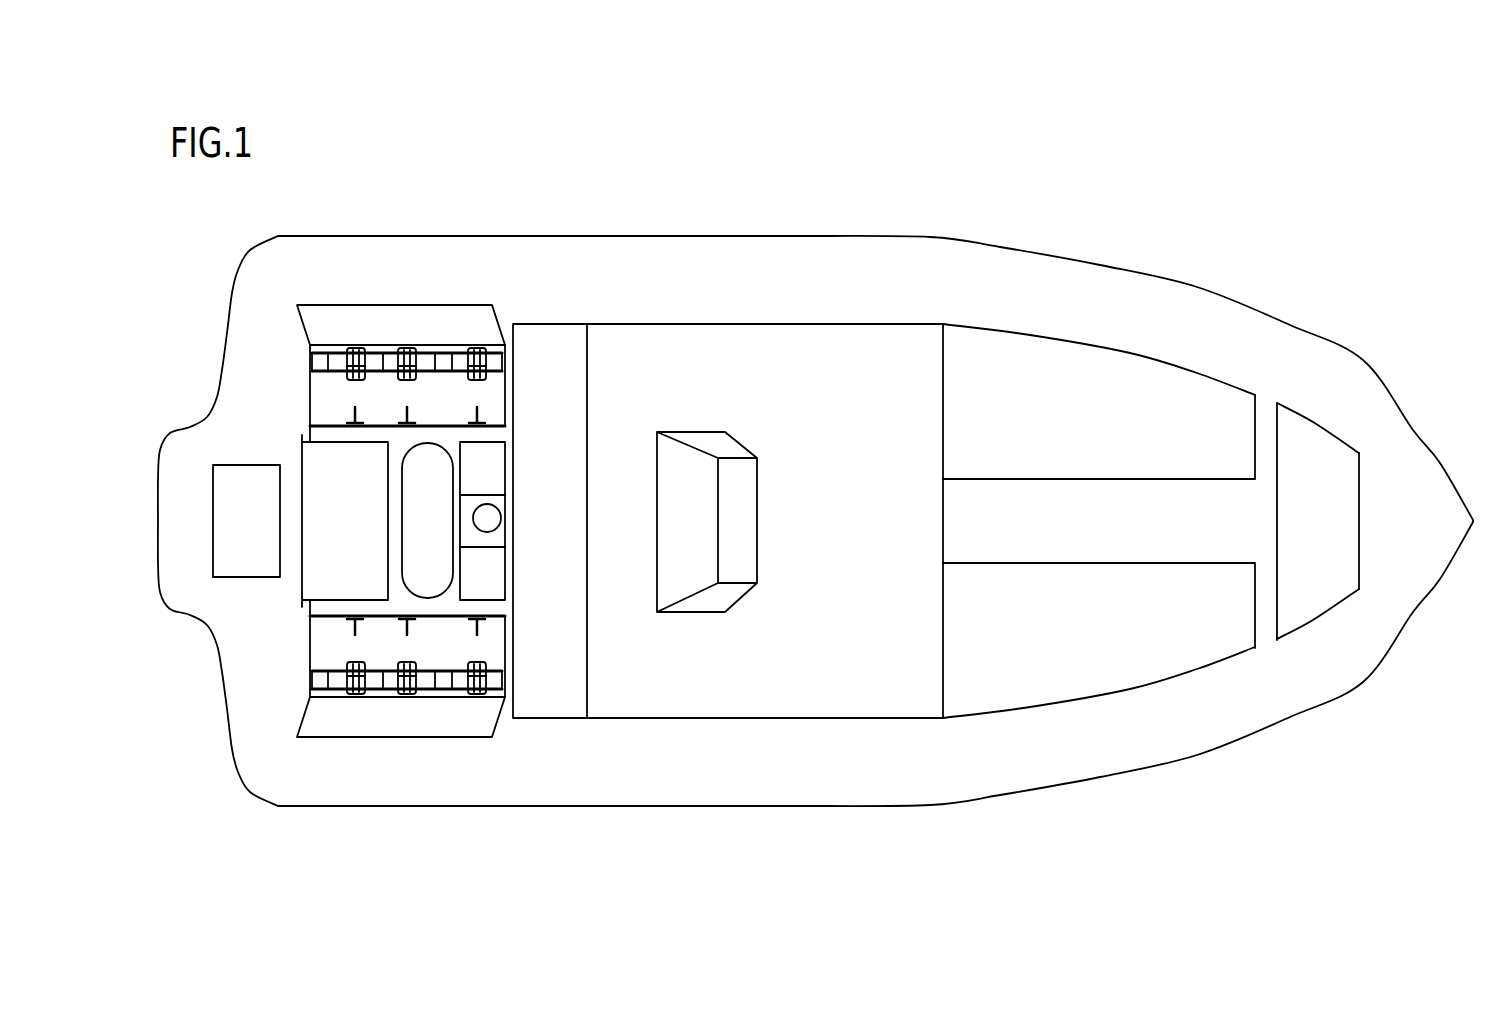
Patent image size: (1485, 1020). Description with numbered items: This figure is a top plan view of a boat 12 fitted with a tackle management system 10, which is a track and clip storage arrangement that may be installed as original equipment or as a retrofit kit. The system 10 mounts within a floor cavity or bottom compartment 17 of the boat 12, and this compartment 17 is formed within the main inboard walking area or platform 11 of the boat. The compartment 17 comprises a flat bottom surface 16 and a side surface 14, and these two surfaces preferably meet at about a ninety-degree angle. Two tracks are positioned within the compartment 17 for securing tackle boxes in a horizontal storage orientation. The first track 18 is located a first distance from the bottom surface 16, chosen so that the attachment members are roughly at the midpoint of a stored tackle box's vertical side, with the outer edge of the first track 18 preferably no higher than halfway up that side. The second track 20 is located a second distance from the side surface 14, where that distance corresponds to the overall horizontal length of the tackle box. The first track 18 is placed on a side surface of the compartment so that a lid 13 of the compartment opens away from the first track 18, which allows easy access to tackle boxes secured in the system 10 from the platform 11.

The tackle management system 10 is at (365, 510).
The platform 11 is at (678, 367).
The boat 12 is at (842, 205).
The lid 13 is at (493, 317).
The side surface 14 is at (330, 425).
The bottom surface 16 is at (454, 413).
The bottom compartment 17 is at (506, 387).
The first track 18 is at (497, 427).
The second track 20 is at (503, 360).